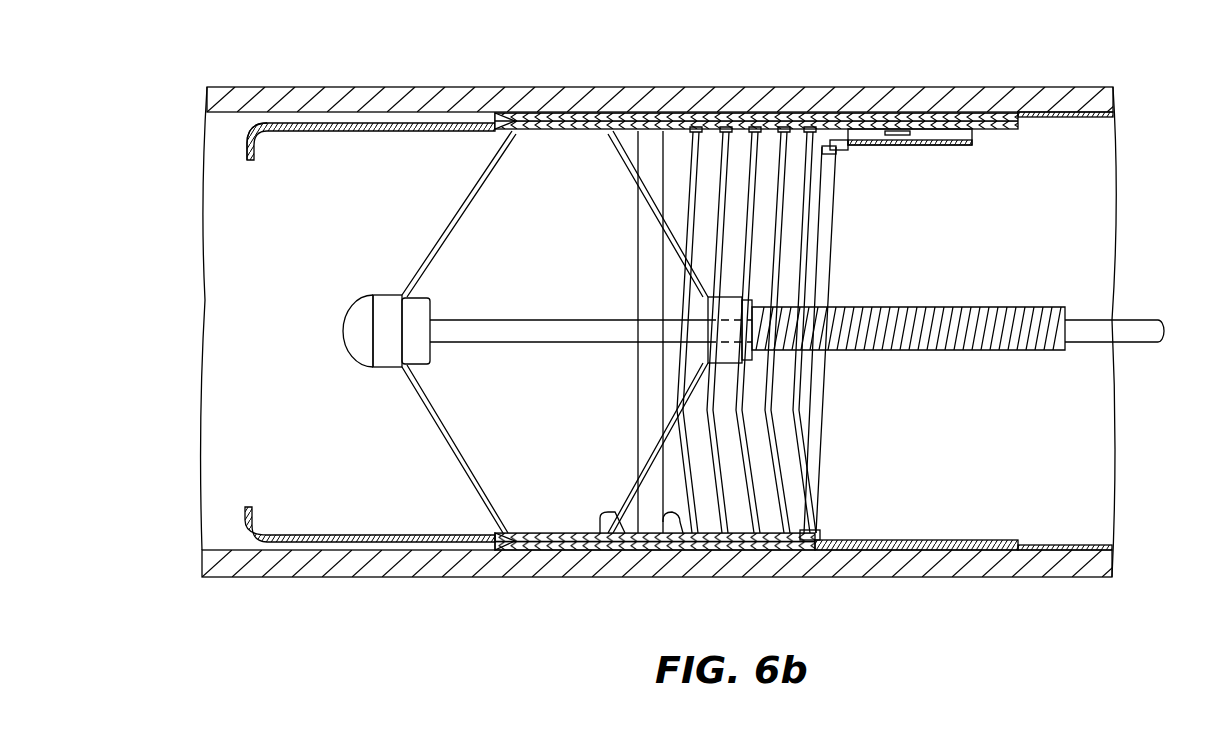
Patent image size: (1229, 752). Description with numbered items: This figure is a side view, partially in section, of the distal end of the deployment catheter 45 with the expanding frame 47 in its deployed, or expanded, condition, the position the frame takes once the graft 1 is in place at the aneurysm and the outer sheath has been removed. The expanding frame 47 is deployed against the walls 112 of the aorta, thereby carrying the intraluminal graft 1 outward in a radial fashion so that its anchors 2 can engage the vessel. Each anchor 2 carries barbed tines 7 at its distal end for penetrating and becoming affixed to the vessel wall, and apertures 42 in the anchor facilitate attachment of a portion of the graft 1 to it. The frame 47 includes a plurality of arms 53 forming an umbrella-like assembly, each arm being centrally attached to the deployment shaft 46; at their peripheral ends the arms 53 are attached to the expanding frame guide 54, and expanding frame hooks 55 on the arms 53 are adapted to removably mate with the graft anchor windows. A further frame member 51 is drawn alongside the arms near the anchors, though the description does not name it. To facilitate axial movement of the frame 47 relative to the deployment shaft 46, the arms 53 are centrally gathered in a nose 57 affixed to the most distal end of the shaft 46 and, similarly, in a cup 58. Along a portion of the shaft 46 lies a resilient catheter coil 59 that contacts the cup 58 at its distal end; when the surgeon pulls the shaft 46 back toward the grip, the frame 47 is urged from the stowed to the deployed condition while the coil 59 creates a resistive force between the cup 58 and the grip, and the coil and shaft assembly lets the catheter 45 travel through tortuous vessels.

The graft 1 is at (1048, 117).
The anchor 2 is at (986, 129).
The barbed tines 7 is at (512, 113).
The apertures 42 is at (367, 123).
The catheter 45 is at (655, 58).
The deployment shaft 46 is at (1155, 342).
The expanding frame 47 is at (431, 425).
The expansion slats frame 51 is at (832, 228).
The arms 53 is at (451, 205).
The expanding frame guide 54 is at (240, 154).
The expanding frame hooks 55 is at (483, 572).
The nose 57 is at (350, 312).
The cup 58 is at (752, 355).
The catheter coil 59 is at (1015, 300).
The walls of the aorta 112 is at (1045, 97).